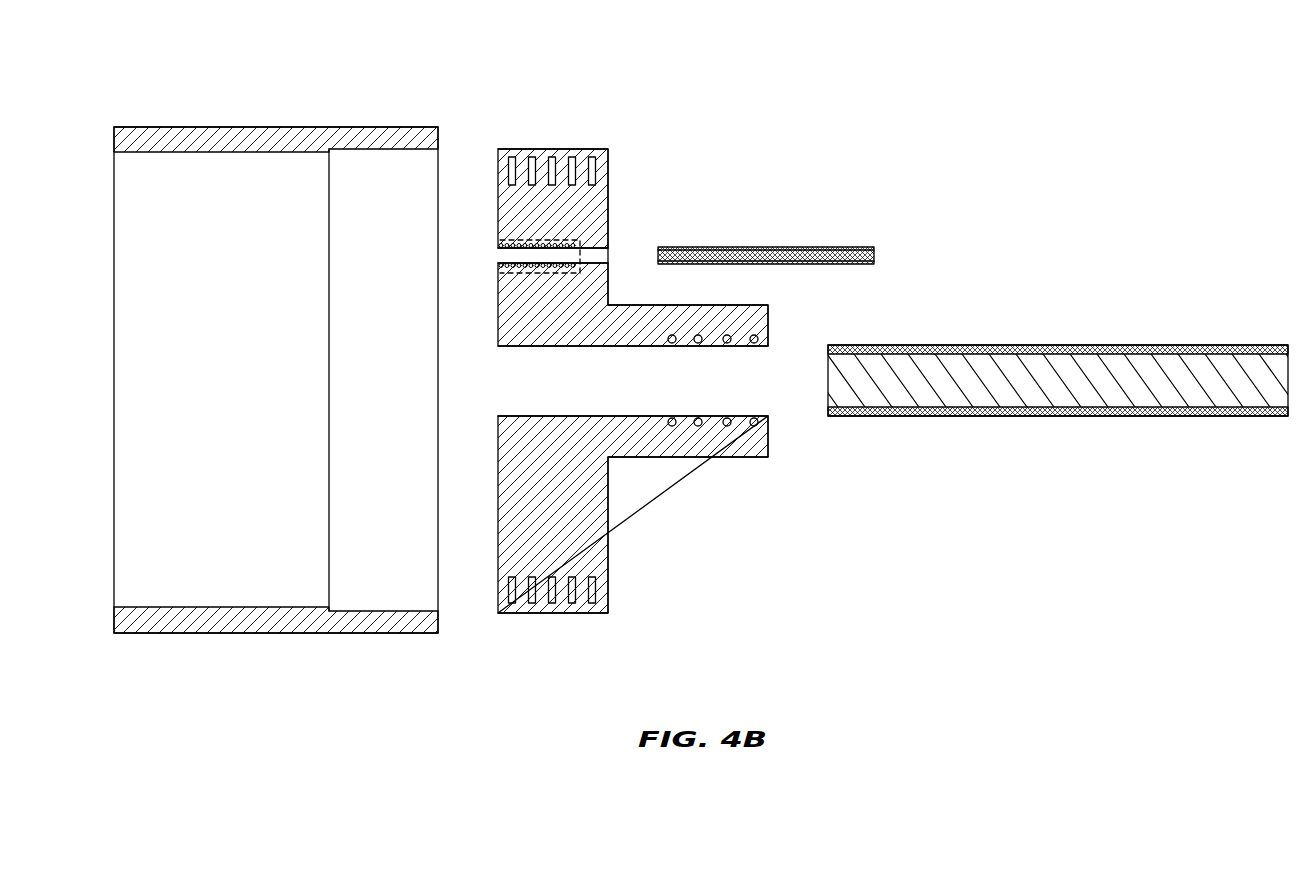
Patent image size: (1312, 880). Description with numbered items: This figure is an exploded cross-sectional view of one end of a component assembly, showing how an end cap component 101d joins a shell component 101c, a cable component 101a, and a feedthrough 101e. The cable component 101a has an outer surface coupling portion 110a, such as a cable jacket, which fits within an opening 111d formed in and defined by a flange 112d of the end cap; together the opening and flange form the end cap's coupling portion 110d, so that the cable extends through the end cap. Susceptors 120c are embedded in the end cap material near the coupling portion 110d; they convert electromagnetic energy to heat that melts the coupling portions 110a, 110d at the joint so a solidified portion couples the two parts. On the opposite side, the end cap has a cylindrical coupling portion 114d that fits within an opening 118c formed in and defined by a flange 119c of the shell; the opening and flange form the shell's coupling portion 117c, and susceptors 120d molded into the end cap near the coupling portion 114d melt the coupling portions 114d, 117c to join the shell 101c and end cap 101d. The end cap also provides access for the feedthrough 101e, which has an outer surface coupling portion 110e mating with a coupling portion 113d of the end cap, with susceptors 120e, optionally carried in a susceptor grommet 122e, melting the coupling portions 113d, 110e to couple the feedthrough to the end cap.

The component 101c is at (308, 333).
The flange 119c is at (393, 127).
The coupling portion 117c is at (400, 156).
The opening 118c is at (436, 584).
The component 101d is at (649, 325).
The coupling portion 114d is at (548, 149).
The susceptor 120d is at (572, 149).
The susceptor grommet 122e is at (520, 248).
The coupling portion 113d is at (518, 250).
The susceptor 120e is at (530, 267).
The coupling portion 110d is at (743, 346).
The opening 111d is at (774, 394).
The susceptor 120c is at (698, 427).
The flange 112d is at (737, 452).
The feedthrough 101e is at (786, 219).
The coupling portion 110e is at (722, 246).
The component 101a is at (1056, 342).
The coupling portion 110a is at (1080, 344).